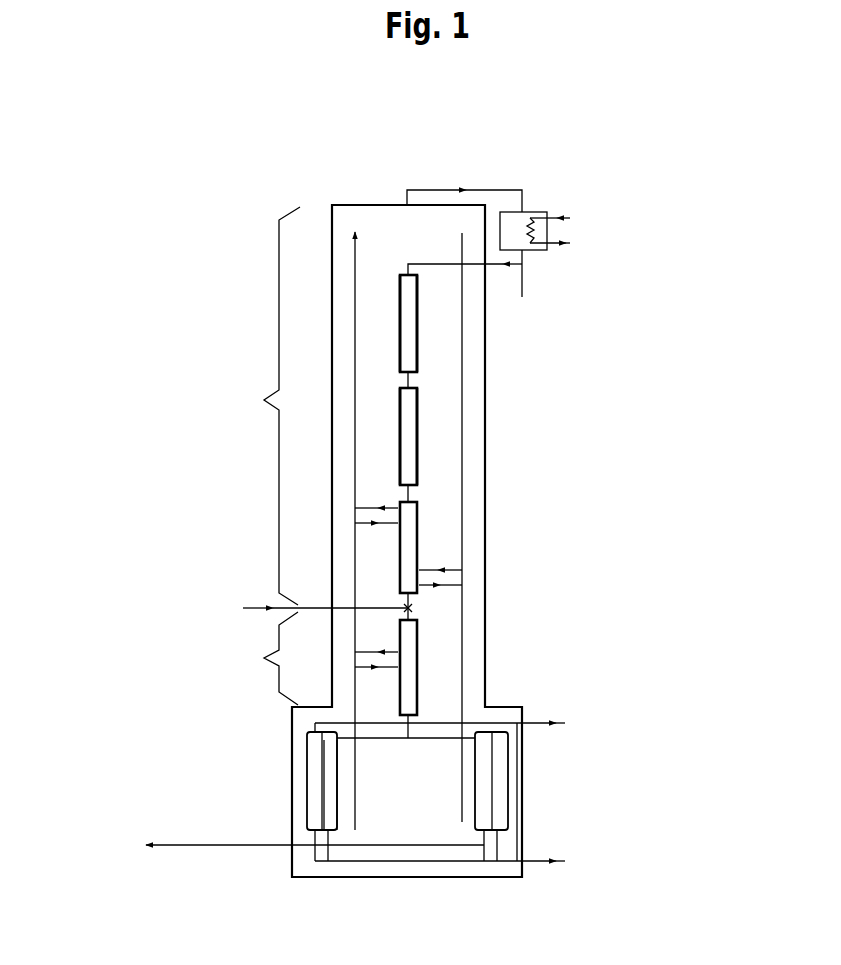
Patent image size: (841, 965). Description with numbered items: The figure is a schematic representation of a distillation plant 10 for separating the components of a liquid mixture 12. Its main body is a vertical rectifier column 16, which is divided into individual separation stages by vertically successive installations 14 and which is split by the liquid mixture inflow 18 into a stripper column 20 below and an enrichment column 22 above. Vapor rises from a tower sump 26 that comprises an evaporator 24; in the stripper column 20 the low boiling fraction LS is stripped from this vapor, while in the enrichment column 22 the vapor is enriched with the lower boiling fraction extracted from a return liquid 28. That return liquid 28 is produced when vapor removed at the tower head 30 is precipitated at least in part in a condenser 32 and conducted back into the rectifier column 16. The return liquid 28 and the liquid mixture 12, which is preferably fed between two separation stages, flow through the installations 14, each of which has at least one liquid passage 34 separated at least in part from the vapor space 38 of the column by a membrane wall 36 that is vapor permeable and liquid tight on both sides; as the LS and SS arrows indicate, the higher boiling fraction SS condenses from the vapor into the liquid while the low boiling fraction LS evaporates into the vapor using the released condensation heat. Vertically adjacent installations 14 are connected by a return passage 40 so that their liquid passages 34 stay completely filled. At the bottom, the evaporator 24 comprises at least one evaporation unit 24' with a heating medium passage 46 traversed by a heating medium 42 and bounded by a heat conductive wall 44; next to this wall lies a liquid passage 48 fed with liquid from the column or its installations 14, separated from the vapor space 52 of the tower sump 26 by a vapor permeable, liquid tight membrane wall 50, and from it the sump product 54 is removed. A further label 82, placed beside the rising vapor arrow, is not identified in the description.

The distillation plant 10 is at (337, 180).
The liquid mixture 12 is at (262, 606).
The installations 14 is at (420, 347).
The rectifier column 16 is at (489, 445).
The liquid mixture inflow 18 is at (406, 605).
The stripper column 20 is at (264, 658).
The enrichment column 22 is at (263, 406).
The evaporator 24 is at (472, 781).
The evaporation unit 24' is at (404, 877).
The tower sump 26 is at (526, 797).
The return liquid 28 is at (513, 272).
The tower head 30 is at (410, 227).
The condenser 32 is at (535, 212).
The liquid passage 34 is at (408, 303).
The membrane wall 36 is at (400, 313).
The vapor space 38 is at (447, 697).
The return passage 40 is at (412, 380).
The heating medium 42 is at (548, 720).
The heat conductive wall 44 is at (307, 748).
The heating medium passage 46 is at (311, 778).
The liquid passage 48 is at (331, 797).
The membrane wall 50 is at (338, 760).
The vapor space 52 is at (421, 832).
The sump product 54 is at (228, 846).
The vapor duct 82 is at (352, 383).